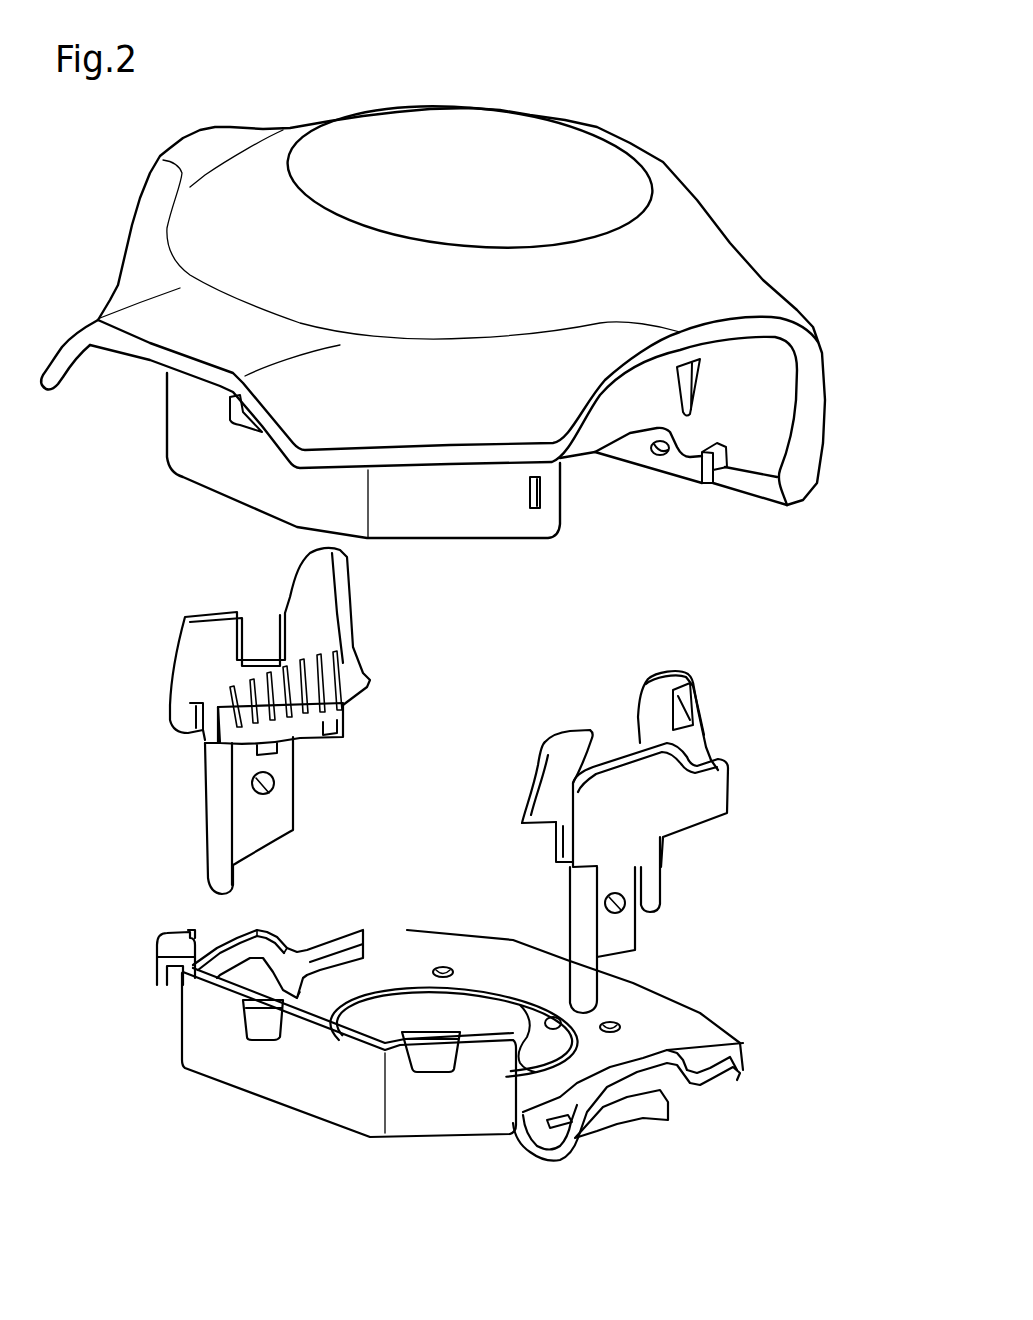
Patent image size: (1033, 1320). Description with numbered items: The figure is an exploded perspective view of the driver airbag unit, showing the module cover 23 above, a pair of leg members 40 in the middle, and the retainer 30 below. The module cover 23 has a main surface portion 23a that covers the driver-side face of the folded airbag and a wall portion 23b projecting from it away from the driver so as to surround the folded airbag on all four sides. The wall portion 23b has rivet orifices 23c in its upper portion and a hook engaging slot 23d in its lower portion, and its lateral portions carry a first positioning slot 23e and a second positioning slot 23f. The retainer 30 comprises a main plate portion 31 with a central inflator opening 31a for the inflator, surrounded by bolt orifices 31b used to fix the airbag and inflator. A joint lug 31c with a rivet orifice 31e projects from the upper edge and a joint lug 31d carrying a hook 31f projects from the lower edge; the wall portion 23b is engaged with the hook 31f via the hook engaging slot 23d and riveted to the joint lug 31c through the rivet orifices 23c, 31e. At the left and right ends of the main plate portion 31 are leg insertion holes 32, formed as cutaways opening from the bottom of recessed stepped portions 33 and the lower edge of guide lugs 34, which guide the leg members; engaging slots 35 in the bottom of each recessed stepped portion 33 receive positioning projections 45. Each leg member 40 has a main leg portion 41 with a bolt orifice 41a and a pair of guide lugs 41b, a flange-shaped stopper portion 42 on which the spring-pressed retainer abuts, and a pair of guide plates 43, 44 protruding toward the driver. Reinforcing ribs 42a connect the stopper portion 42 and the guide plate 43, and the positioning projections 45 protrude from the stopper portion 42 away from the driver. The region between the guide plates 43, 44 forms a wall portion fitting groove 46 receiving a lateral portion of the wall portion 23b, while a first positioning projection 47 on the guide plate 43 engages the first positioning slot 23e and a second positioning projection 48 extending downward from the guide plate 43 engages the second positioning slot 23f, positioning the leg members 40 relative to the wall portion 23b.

The module cover 23 is at (433, 300).
The main surface portion 23a is at (488, 126).
The wall portion 23b is at (205, 470).
The rivet orifices 23c is at (658, 457).
The hook engaging slot 23d is at (232, 404).
The first positioning slot 23e is at (700, 376).
The second positioning slot 23f is at (524, 486).
The retainer 30 is at (451, 1046).
The main plate portion 31 is at (435, 1022).
The inflator opening 31a is at (372, 1017).
The bolt orifices 31b is at (443, 966).
The joint lug 31c is at (527, 1050).
The joint lug 31d is at (306, 1101).
The rivet orifice 31e is at (551, 1017).
The hook 31f is at (158, 936).
The leg insertion holes 32 is at (471, 1046).
The recessed stepped portions 33 is at (376, 959).
The guide lugs 34 is at (275, 936).
The engaging slots 35 is at (563, 1110).
The leg members 40 is at (436, 772).
The main leg portion 41 is at (434, 875).
The bolt orifice 41a is at (256, 781).
The guide lugs 41b is at (215, 842).
The stopper portion 42 is at (270, 697).
The reinforcing ribs 42a is at (314, 656).
The guide plate 43 is at (290, 597).
The guide plate 44 is at (250, 633).
The positioning projections 45 is at (323, 733).
The wall portion fitting groove 46 is at (195, 718).
The first positioning projection 47 is at (690, 706).
The second positioning projection 48 is at (170, 706).